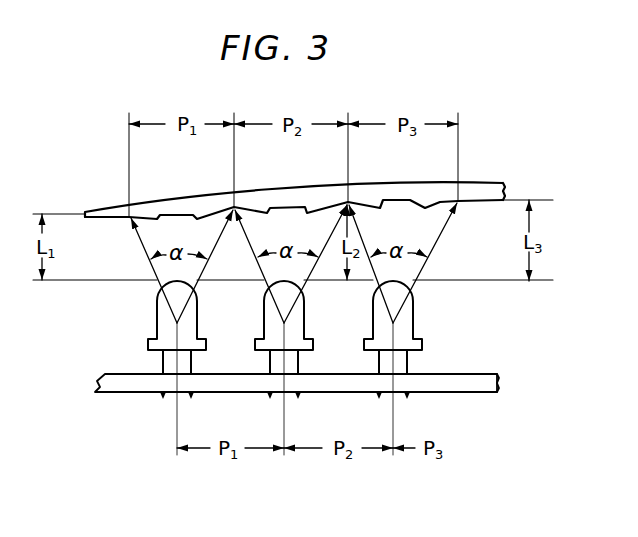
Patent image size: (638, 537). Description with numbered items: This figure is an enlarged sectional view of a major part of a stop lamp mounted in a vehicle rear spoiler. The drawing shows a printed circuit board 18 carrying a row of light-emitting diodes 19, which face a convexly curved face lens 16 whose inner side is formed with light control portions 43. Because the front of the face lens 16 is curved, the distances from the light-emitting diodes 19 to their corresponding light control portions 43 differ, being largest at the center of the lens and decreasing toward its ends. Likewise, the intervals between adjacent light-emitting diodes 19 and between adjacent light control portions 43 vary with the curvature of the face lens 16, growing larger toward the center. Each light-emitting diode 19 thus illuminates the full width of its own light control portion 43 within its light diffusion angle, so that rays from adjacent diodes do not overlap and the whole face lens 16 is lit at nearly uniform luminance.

The face lens 16 is at (493, 182).
The printed circuit board 18 is at (483, 387).
The light-emitting diodes 19 is at (197, 322).
The light control portions 43 is at (170, 229).